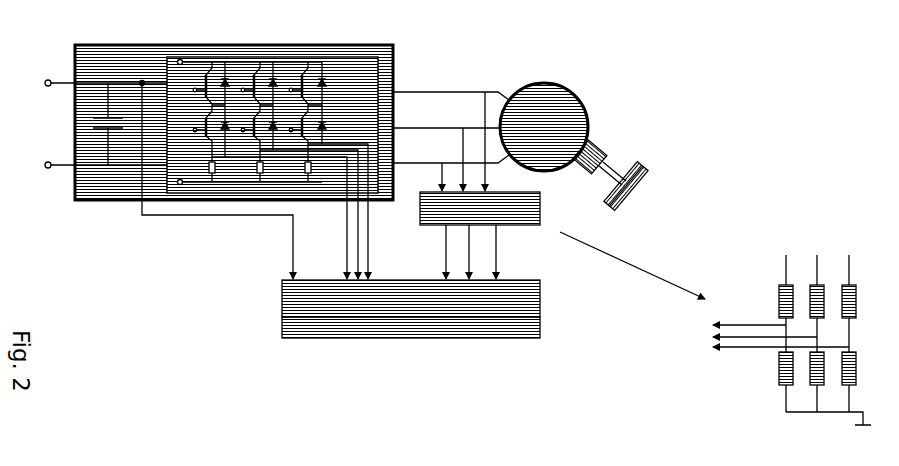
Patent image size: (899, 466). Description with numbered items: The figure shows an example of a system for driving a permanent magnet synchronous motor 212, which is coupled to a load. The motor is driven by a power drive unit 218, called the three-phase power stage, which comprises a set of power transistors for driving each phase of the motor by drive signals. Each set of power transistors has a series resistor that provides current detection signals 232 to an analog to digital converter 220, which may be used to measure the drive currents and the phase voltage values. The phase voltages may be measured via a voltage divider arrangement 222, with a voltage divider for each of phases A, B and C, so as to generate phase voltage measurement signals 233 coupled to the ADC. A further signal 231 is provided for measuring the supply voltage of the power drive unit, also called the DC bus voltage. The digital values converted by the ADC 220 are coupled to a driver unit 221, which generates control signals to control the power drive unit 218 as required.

The permanent magnet synchronous motor 212 is at (578, 98).
The power drive unit 218 is at (122, 201).
The analog to digital converter 220 is at (541, 300).
The driver unit 221 is at (430, 340).
The voltage divider arrangement 222 is at (745, 353).
The further signal 231 is at (250, 216).
The current detection signals 232 is at (358, 243).
The phase voltage measurement signals 233 is at (497, 252).